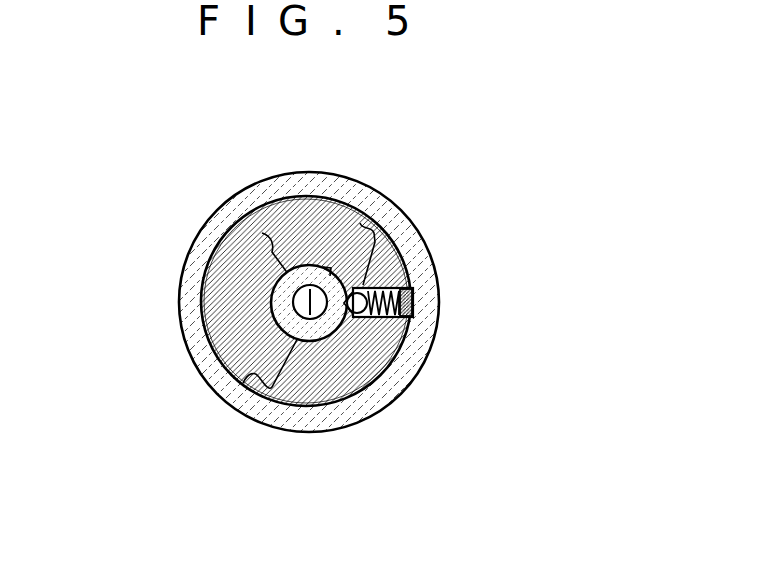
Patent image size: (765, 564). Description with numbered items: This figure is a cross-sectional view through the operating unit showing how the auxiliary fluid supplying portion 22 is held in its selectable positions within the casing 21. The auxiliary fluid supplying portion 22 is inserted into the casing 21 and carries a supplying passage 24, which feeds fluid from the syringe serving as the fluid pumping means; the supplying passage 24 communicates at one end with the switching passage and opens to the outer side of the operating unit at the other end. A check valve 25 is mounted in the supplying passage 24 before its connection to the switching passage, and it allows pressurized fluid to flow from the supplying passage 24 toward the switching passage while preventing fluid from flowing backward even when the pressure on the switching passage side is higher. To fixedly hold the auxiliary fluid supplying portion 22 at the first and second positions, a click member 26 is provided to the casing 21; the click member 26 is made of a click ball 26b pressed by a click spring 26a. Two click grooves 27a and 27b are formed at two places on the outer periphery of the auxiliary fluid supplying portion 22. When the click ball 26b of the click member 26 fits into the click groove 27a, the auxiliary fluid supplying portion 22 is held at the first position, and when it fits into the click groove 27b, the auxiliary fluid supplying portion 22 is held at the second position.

The casing 21 is at (233, 287).
The auxiliary fluid supplying portion 22 is at (243, 383).
The supplying passage 24 is at (293, 306).
The check valve 25 is at (262, 233).
The click member 26 is at (445, 273).
The click spring 26a is at (387, 285).
The click ball 26b is at (360, 223).
The click groove 27a is at (352, 318).
The click groove 27b is at (337, 270).